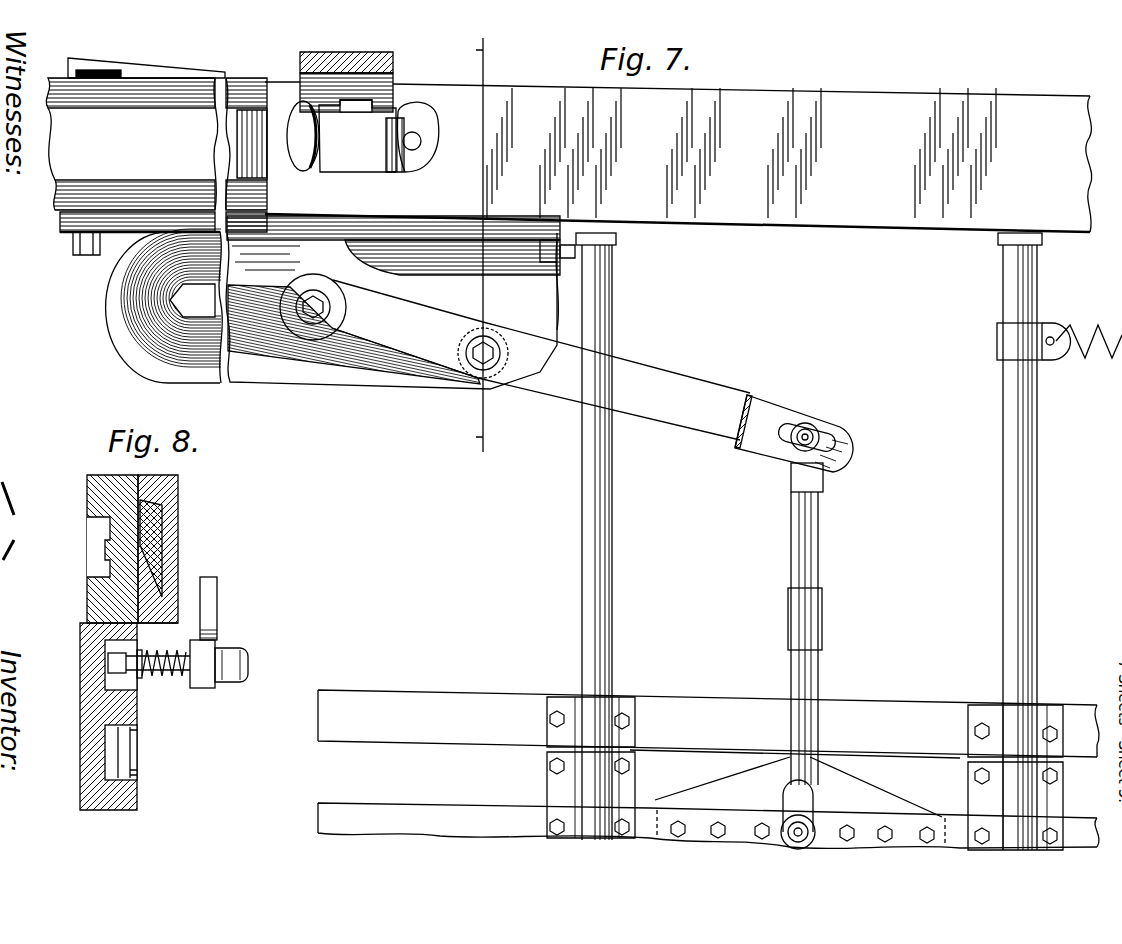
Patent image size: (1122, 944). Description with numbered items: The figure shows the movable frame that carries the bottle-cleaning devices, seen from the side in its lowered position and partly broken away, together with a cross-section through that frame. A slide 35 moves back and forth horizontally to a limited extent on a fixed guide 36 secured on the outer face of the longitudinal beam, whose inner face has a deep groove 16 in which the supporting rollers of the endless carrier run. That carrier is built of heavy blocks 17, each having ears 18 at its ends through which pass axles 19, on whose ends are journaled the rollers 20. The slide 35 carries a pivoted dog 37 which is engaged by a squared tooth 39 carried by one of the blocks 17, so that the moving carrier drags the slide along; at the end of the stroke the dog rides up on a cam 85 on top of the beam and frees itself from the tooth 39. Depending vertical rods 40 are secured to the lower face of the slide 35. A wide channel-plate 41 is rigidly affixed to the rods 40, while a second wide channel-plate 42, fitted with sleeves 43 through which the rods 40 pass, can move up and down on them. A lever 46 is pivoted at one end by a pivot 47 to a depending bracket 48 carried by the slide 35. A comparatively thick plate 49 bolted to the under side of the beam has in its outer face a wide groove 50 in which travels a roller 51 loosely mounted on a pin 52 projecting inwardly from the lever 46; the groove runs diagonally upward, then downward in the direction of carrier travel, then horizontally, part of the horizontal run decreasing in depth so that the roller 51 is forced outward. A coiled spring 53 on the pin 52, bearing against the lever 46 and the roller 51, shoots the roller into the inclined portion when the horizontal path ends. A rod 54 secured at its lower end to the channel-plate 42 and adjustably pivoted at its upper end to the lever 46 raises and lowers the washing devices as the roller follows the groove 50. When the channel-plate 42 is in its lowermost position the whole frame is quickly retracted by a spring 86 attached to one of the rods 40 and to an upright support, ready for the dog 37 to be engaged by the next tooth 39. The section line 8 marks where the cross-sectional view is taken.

In FIG. 7, the section line 8 8 is at (486, 249).
In FIG. 8, the deep groove 16 is at (90, 527).
In FIG. 7, the block 17 is at (341, 136).
In FIG. 7, the ear 18 is at (400, 125).
In FIG. 7, the axle 19 is at (421, 143).
In FIG. 7, the roller 20 is at (414, 134).
In FIG. 7, the slide 35 is at (678, 157).
In FIG. 8, the slide 35 is at (178, 495).
In FIG. 7, the fixed guide 36 is at (156, 166).
In FIG. 8, the fixed guide 36 is at (155, 553).
In FIG. 7, the pivoted dog 37 is at (343, 88).
In FIG. 7, the squared tooth 39 is at (352, 112).
In FIG. 7, the depending vertical rod 40 is at (1012, 552).
In FIG. 7, the wide channel-plate 41 is at (708, 724).
In FIG. 7, the wide channel-plate 42 is at (708, 803).
In FIG. 7, the sleeve 43 is at (805, 773).
In FIG. 7, the lever 46 is at (592, 376).
In FIG. 8, the lever 46 is at (210, 607).
In FIG. 7, the pivot 47 is at (325, 305).
In FIG. 7, the depending bracket 48 is at (393, 245).
In FIG. 7, the thick plate 49 is at (400, 311).
In FIG. 8, the thick plate 49 is at (93, 710).
In FIG. 7, the wide groove 50 is at (275, 330).
In FIG. 8, the wide groove 50 is at (130, 757).
In FIG. 8, the roller 51 is at (141, 684).
In FIG. 8, the pin 52 is at (176, 680).
In FIG. 8, the coiled spring 53 is at (160, 652).
In FIG. 7, the rod 54 is at (815, 682).
In FIG. 7, the cam 85 is at (133, 75).
In FIG. 7, the spring 86 is at (1075, 358).